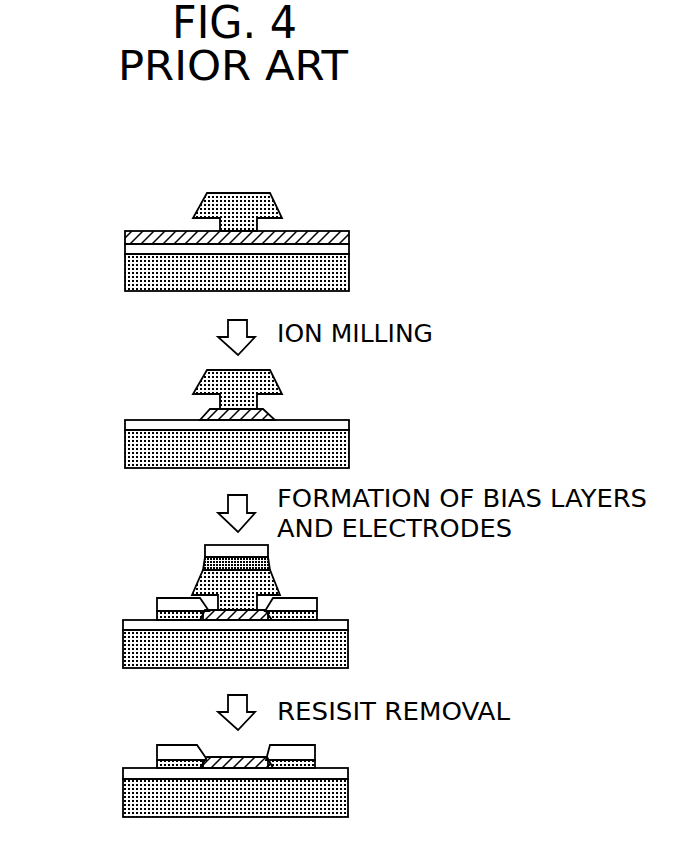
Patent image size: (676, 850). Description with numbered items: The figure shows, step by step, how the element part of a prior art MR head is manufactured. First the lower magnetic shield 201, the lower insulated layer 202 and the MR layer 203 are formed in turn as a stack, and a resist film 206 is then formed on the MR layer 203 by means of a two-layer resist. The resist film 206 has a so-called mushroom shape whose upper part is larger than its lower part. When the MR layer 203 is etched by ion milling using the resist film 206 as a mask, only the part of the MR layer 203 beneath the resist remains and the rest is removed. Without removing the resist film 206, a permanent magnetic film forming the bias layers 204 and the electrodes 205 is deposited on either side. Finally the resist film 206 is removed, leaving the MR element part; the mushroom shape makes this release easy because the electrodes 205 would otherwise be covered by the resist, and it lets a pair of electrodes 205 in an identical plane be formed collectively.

The lower magnetic shield 201 is at (125, 276).
The lower insulated layer 202 is at (125, 247).
The MR layer 203 is at (313, 238).
The bias layers 204 is at (157, 617).
The electrodes 205 is at (175, 602).
The resist film 206 is at (207, 203).